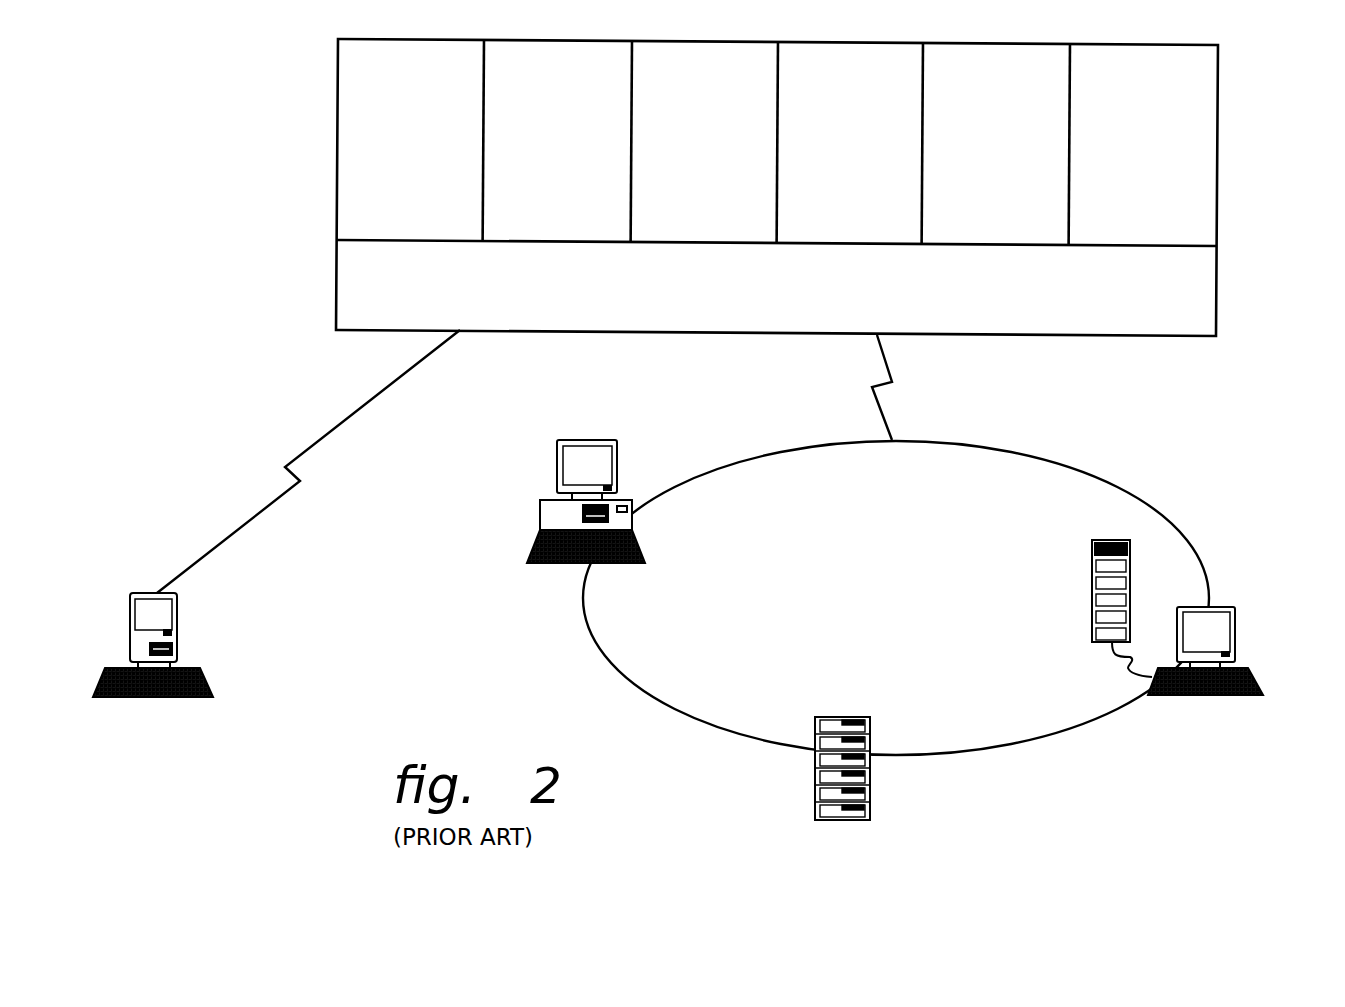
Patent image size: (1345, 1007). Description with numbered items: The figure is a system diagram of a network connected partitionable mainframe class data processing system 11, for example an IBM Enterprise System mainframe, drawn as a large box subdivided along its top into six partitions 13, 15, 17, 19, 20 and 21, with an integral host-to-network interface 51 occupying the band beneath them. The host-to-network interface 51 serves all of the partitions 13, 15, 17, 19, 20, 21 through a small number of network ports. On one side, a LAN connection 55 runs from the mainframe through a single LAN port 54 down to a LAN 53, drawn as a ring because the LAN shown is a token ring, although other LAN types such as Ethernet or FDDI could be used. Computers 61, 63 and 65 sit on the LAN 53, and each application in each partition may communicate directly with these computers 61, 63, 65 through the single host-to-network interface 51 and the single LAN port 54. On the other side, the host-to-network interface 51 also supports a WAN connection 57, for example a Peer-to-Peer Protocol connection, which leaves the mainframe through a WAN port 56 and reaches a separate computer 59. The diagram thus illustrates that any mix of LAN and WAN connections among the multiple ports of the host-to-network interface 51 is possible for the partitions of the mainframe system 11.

The partitionable mainframe class data processing system 11 is at (1218, 137).
The partition 13 is at (430, 152).
The partition 15 is at (570, 152).
The partition 17 is at (710, 152).
The partition 19 is at (871, 152).
The partition 20 is at (1011, 152).
The partition 21 is at (1153, 152).
The host-to-network interface 51 is at (1091, 311).
The LAN 53 is at (978, 753).
The LAN port 54 is at (880, 337).
The LAN connection 55 is at (873, 407).
The WAN port 56 is at (462, 333).
The WAN connection 57 is at (370, 398).
The computer 59 is at (177, 614).
The computer 61 is at (633, 513).
The computer 63 is at (848, 718).
The computer 65 is at (1235, 633).